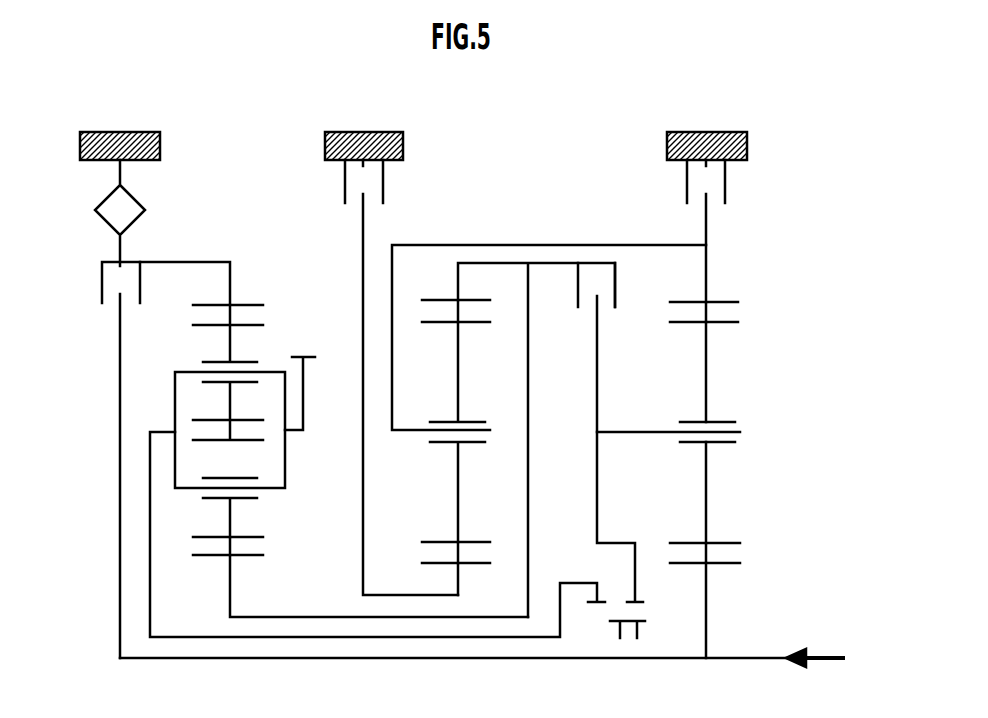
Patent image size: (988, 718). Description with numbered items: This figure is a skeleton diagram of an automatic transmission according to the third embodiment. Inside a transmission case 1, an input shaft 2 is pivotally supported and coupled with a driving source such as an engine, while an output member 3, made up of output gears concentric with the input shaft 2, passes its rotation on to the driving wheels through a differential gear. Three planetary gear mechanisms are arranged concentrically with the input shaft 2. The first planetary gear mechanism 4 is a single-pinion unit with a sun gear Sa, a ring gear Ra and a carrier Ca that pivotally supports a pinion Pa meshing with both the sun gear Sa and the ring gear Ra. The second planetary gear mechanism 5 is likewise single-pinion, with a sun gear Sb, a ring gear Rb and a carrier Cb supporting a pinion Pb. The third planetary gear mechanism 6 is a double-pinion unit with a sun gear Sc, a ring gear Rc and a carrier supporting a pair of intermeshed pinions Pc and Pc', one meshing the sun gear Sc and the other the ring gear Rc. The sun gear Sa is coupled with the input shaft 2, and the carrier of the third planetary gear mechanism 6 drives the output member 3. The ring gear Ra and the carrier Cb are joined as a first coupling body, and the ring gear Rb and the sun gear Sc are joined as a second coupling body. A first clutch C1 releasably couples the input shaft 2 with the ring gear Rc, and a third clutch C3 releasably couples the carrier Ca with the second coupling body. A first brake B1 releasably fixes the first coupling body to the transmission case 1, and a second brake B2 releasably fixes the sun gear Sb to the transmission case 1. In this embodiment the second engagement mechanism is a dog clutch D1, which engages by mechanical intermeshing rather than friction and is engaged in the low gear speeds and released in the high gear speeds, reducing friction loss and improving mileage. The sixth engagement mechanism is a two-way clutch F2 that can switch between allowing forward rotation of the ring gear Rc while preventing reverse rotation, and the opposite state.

The transmission case 1 is at (120, 130).
The input shaft 2 is at (757, 660).
The output member 3 is at (308, 355).
The first planetary gear mechanism 4 is at (770, 297).
The second planetary gear mechanism 5 is at (428, 367).
The third planetary gear mechanism 6 is at (172, 378).
The 2-way clutch F2 is at (106, 200).
The first clutch C1 is at (121, 460).
The third clutch C3 is at (610, 432).
The first brake B1 is at (706, 231).
The second brake B2 is at (401, 377).
The dog clutch D1 is at (646, 626).
The ring gear Ra is at (730, 303).
The pinion Pa is at (683, 320).
The carrier Ca is at (640, 434).
The sun gear Sa is at (730, 562).
The ring gear Rb is at (478, 302).
The carrier Cb is at (412, 433).
The pinion Pb is at (480, 545).
The sun gear Sb is at (433, 560).
The ring gear Rc is at (200, 307).
The pinion Pc' is at (238, 313).
The pinion Pc is at (246, 548).
The sun gear Sc is at (206, 553).